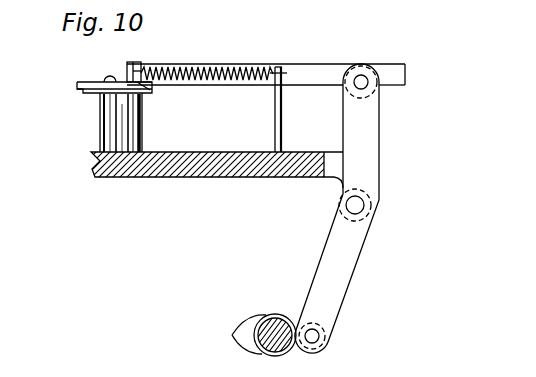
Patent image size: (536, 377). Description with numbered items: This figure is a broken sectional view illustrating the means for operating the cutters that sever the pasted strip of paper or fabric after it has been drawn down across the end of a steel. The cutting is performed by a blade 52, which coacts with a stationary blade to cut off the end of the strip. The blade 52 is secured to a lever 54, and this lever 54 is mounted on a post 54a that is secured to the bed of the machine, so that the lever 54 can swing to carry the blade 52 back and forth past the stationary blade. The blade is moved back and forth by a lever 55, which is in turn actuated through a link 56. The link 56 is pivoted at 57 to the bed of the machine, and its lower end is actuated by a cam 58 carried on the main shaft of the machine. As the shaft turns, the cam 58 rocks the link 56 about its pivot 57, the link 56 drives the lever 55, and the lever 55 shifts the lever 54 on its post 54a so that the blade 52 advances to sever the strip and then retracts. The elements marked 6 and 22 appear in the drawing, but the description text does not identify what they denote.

The base 6 is at (211, 162).
The shaft 22 is at (272, 352).
The blade 52 is at (93, 82).
The lever 54 is at (152, 90).
The post 54a is at (128, 138).
The lever 55 is at (312, 73).
The link 56 is at (366, 159).
The pivot 57 is at (357, 205).
The cam 58 is at (254, 321).